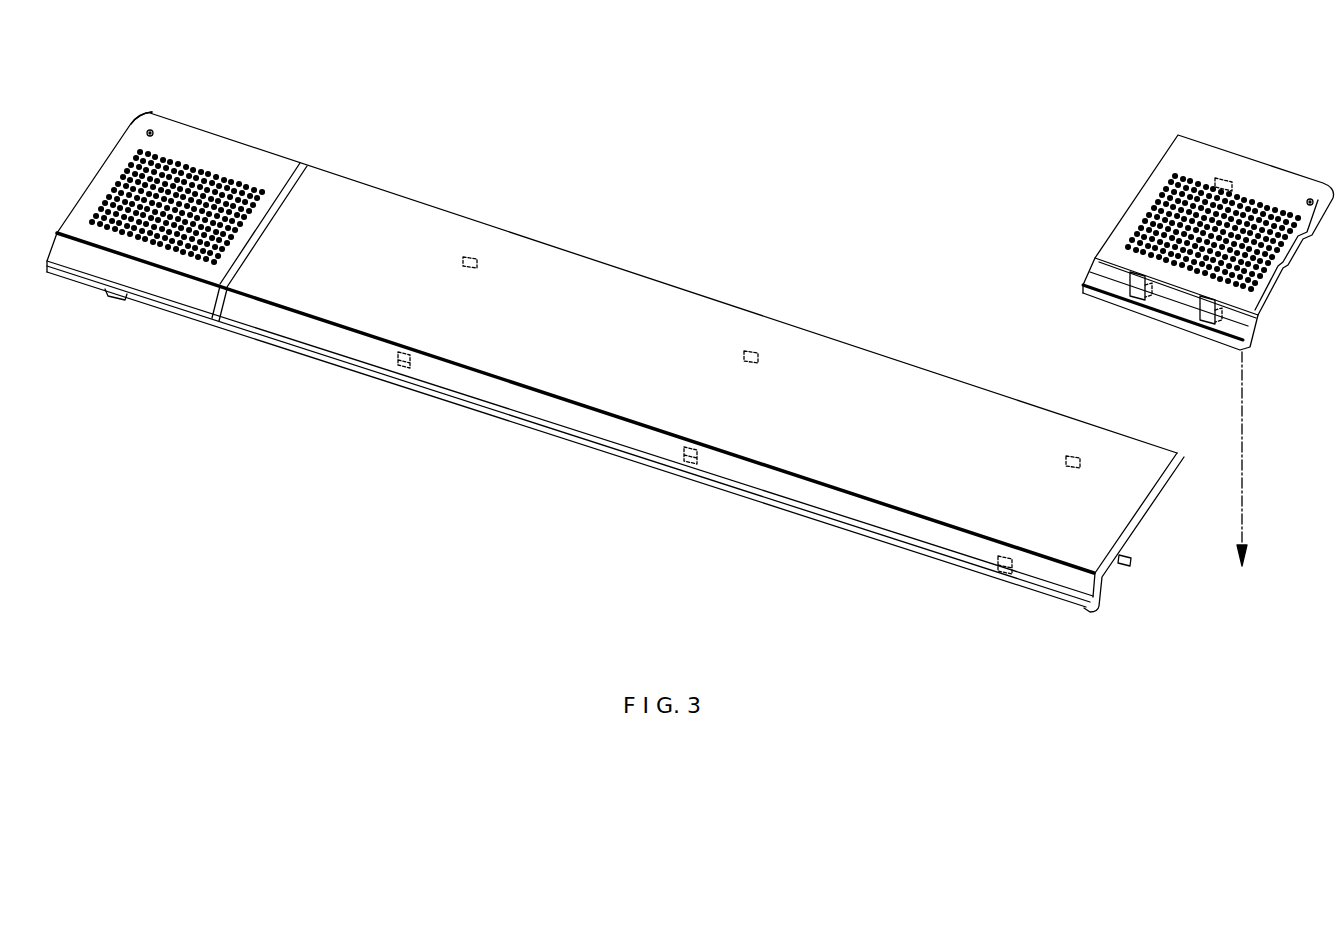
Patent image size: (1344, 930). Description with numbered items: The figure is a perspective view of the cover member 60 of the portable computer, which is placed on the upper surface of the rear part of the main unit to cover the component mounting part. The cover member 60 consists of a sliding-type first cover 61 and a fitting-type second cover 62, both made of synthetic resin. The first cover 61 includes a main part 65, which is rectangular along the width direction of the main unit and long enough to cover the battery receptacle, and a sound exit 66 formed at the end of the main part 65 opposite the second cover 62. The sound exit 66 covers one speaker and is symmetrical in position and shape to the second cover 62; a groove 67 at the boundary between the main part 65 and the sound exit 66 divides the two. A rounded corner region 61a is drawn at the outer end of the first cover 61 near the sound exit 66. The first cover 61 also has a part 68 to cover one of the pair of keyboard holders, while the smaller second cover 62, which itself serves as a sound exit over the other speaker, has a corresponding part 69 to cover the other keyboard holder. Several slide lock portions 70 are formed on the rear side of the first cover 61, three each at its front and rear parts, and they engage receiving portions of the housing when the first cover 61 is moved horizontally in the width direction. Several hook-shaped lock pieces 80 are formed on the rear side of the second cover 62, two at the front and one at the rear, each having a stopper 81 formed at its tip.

The cover member 60 is at (581, 253).
The first cover 61 is at (897, 410).
The rounded corner portion 61a is at (98, 172).
The second cover 62 is at (1145, 203).
The main part 65 is at (636, 314).
The sound exit 66 is at (193, 172).
The groove 67 is at (272, 229).
The part to cover keyboard holder 68 is at (148, 280).
The part to cover keyboard holder 69 is at (1262, 337).
The slide lock portion 70 is at (478, 255).
The hook-shaped lock piece 80 is at (1228, 190).
The stopper 81 is at (1206, 185).